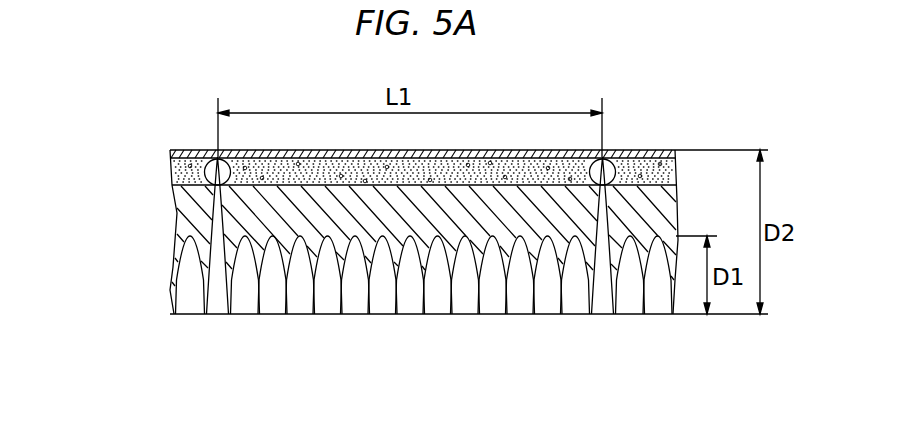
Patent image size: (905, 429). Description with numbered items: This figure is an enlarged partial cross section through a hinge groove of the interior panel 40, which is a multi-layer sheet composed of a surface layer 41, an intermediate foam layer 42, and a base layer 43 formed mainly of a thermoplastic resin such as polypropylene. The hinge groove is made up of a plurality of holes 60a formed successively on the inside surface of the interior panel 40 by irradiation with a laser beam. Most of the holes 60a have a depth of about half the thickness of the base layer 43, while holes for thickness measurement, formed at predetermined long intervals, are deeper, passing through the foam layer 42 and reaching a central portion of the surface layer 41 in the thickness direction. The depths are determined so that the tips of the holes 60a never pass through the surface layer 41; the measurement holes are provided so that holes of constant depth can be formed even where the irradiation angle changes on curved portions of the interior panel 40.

The interior panel 40 is at (66, 163).
The surface layer 41 is at (168, 154).
The intermediate foam layer 42 is at (168, 175).
The base layer 43 is at (168, 208).
The holes 60a is at (550, 312).